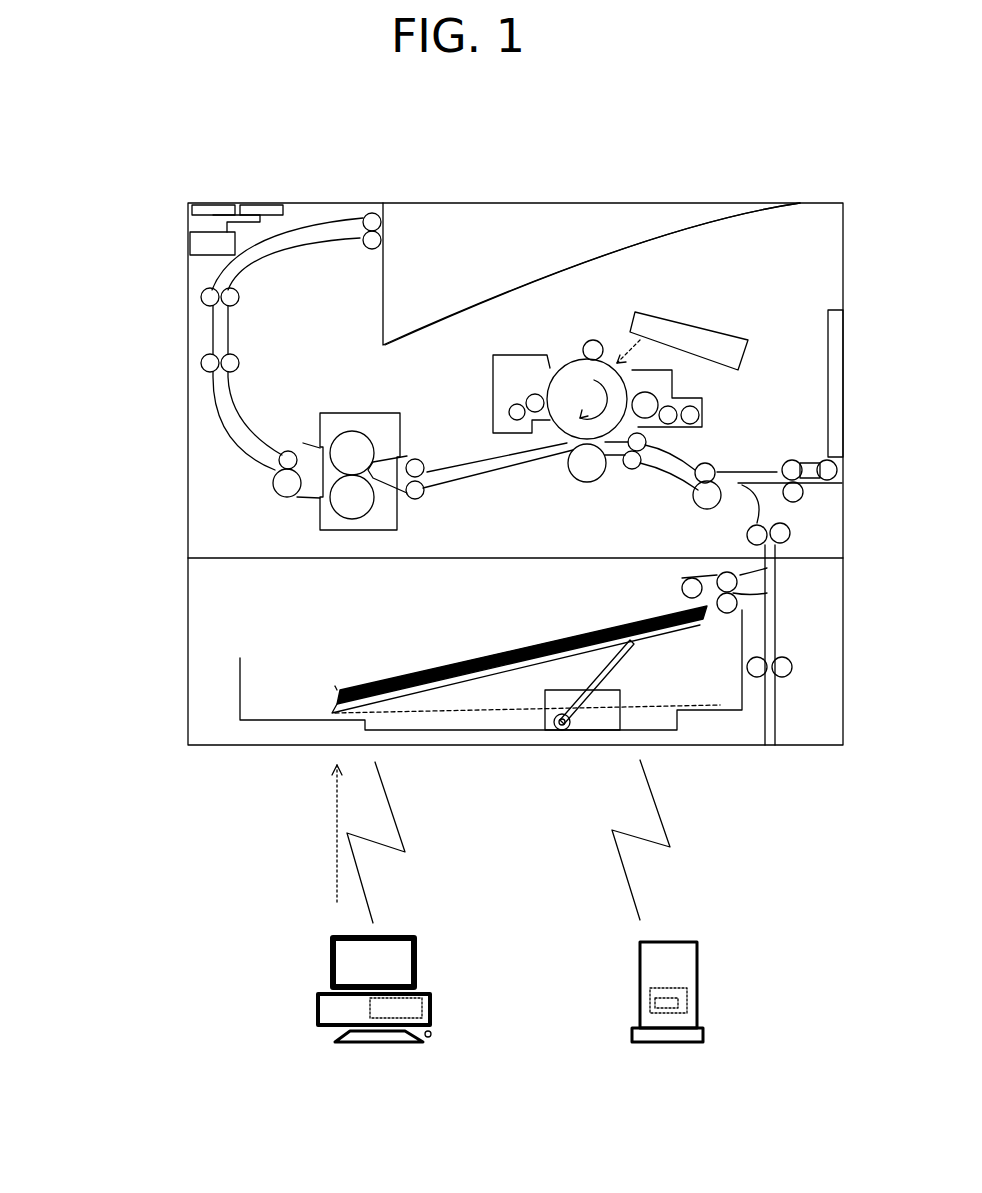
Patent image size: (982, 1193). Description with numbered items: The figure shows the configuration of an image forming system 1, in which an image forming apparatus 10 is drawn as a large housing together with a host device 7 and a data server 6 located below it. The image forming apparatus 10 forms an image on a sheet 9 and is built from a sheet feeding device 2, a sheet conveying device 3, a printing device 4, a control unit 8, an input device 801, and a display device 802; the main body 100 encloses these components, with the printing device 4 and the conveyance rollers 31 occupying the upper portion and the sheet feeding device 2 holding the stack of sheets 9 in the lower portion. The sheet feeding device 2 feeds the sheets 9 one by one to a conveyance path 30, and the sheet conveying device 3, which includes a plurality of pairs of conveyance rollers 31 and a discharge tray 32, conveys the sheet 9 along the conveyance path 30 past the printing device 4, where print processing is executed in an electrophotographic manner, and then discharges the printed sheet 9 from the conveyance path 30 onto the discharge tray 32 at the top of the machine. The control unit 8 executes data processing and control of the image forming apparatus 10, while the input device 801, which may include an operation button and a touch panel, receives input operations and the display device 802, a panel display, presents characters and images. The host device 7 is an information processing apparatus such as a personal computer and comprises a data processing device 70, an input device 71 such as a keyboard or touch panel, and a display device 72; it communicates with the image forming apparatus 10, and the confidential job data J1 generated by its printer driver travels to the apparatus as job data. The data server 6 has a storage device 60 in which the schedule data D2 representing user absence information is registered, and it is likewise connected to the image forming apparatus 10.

The image forming system 1 is at (100, 153).
The image forming apparatus 100 is at (186, 503).
The image forming apparatus 10 is at (757, 203).
The discharge tray 32 is at (603, 250).
The sheet feeding device 2 is at (186, 592).
The sheet conveying device 3 is at (805, 577).
The sheet 9 is at (453, 662).
The printing device 4 is at (303, 358).
The conveyance path 30 is at (680, 490).
The conveyance rollers 31 is at (363, 217).
The control unit 8 is at (190, 250).
The input device 801 is at (215, 203).
The display device 802 is at (263, 203).
The host device 7 is at (302, 947).
The confidential job data J1 is at (333, 846).
The display device 72 is at (418, 957).
The data processing device 70 is at (432, 1003).
The input device 71 is at (432, 1034).
The data server 6 is at (617, 948).
The storage device 60 is at (668, 985).
The schedule data D2 is at (683, 1000).